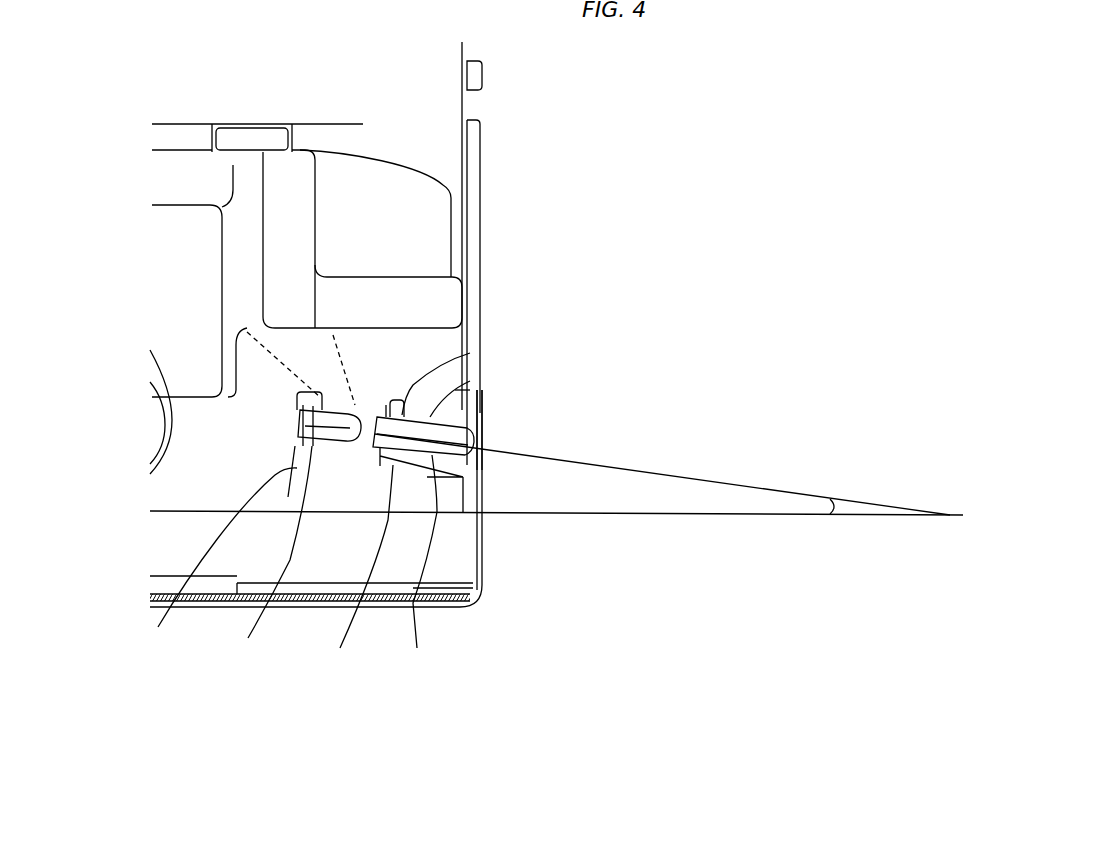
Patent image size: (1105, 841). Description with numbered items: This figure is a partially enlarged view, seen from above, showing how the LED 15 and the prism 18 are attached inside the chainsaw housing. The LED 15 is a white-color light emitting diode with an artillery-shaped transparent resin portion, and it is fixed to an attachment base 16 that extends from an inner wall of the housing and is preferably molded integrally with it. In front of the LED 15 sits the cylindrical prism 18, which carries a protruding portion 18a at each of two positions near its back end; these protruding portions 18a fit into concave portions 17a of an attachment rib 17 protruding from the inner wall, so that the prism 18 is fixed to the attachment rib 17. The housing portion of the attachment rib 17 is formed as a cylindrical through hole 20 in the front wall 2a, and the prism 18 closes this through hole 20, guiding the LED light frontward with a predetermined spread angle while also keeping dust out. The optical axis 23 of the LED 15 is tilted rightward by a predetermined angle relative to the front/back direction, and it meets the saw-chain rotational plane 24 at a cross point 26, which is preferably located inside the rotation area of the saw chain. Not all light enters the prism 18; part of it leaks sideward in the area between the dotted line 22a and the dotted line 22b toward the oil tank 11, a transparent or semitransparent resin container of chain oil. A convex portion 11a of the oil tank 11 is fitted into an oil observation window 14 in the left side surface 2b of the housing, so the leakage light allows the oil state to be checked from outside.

The front wall 2a is at (485, 252).
The left side surface 2b is at (178, 120).
The oil tank 11 is at (382, 192).
The convex portion 11a is at (263, 137).
The oil observation window 14 is at (217, 124).
The LED 15 is at (299, 539).
The attachment base 16 is at (229, 521).
The attachment rib 17 is at (470, 381).
The concave portions 17a is at (470, 353).
The prism 18 is at (422, 564).
The protruding portion 18a is at (360, 569).
The through hole 20 is at (483, 440).
The dotted line 22a is at (340, 357).
The dotted line 22b is at (237, 352).
The optical axis 23 is at (712, 480).
The saw-chain rotational plane 24 is at (720, 517).
The cross point 26 is at (949, 513).